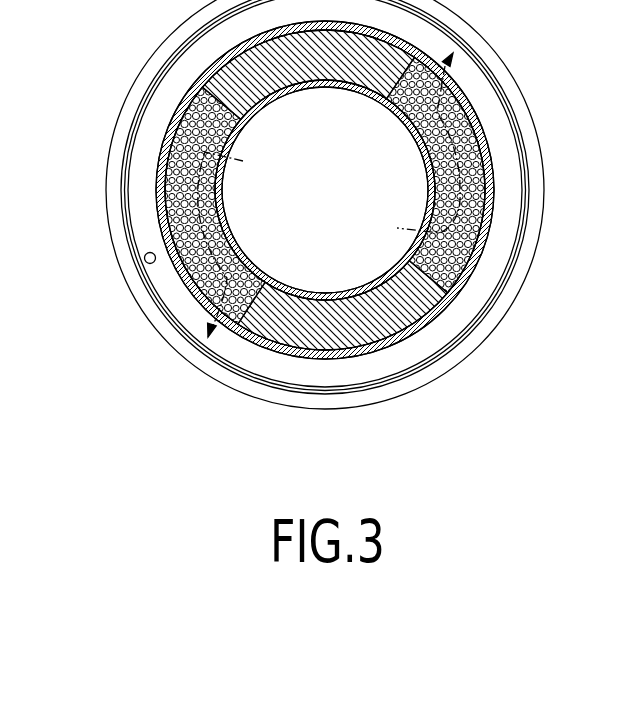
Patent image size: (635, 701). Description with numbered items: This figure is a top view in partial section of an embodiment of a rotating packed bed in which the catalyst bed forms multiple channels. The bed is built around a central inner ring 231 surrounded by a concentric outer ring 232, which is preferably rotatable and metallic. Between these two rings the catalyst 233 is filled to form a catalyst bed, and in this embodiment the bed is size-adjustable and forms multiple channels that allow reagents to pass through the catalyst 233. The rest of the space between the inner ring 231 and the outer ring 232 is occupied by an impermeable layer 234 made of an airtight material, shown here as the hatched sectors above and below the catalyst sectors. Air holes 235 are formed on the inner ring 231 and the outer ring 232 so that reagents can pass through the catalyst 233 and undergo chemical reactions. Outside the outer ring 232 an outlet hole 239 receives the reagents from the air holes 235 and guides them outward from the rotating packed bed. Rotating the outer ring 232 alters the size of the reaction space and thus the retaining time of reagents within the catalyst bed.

The inner ring 231 is at (288, 293).
The outer ring 232 is at (263, 345).
The catalyst 233 is at (492, 157).
The impermeable layer 234 is at (322, 327).
The air holes 235 is at (226, 152).
The outlet hole 239 is at (146, 261).